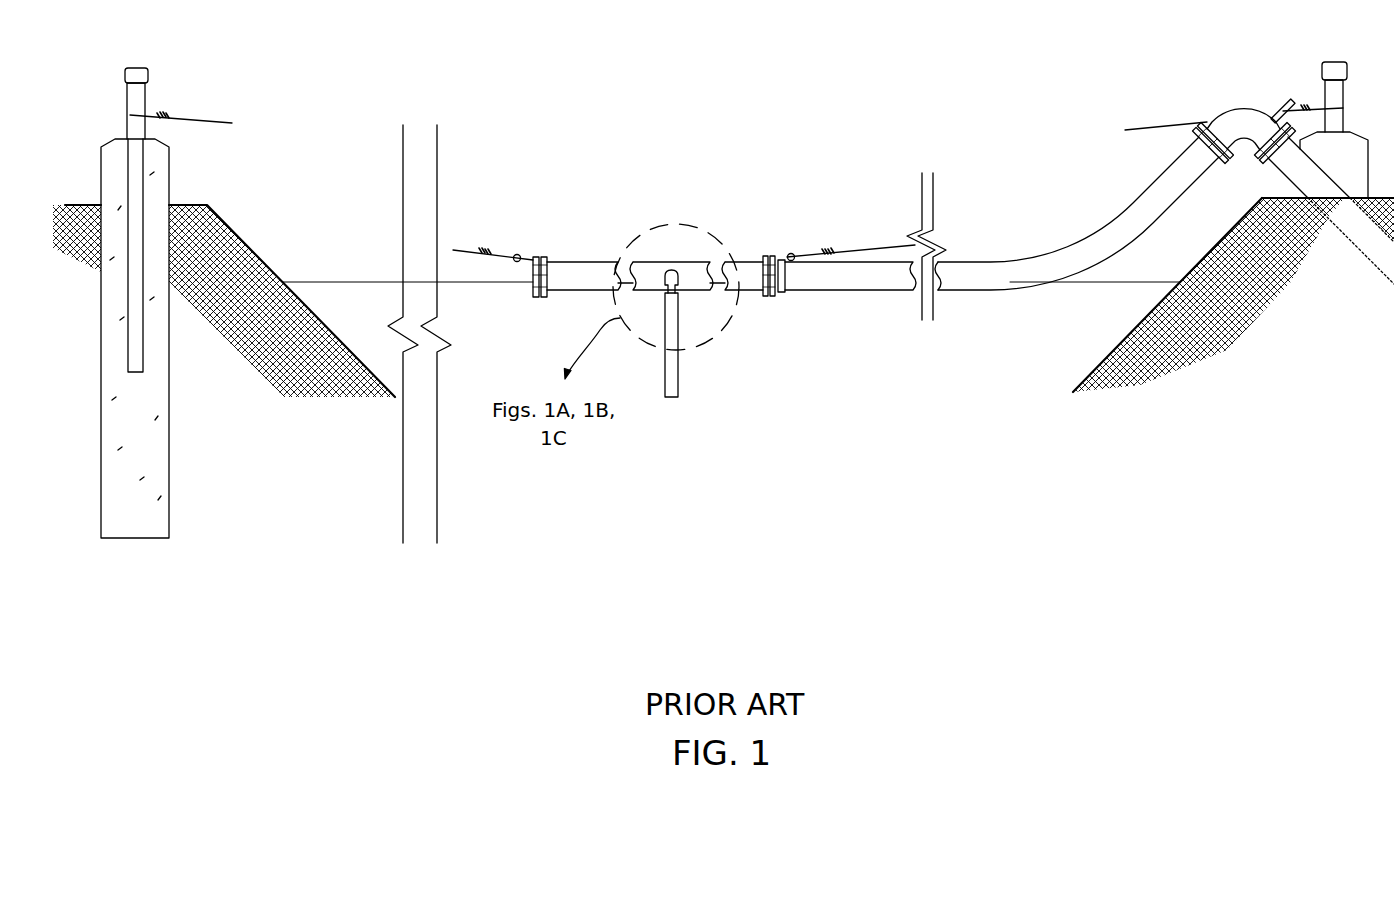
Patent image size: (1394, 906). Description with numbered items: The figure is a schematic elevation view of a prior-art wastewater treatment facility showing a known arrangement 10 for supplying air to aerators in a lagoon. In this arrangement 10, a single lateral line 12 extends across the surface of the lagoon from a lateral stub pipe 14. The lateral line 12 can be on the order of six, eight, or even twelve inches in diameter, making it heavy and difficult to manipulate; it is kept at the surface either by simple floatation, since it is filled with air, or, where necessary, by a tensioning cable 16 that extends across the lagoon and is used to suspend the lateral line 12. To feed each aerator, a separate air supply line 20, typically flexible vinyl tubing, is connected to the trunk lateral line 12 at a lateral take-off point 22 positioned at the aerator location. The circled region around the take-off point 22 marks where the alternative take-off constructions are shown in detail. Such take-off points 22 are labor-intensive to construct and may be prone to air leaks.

The arrangement 10 is at (931, 548).
The lateral line 12 is at (985, 277).
The lateral stub pipe 14 is at (1332, 203).
The tensioning cable 16 is at (203, 122).
The air supply line 20 is at (678, 372).
The lateral take-off point 22 is at (692, 306).